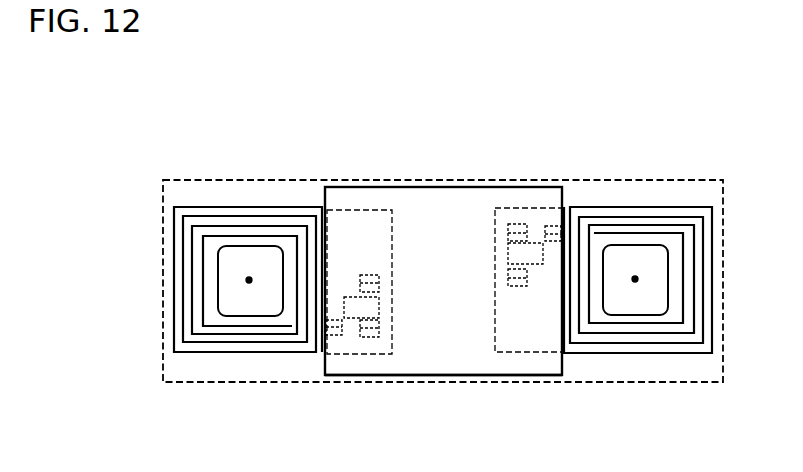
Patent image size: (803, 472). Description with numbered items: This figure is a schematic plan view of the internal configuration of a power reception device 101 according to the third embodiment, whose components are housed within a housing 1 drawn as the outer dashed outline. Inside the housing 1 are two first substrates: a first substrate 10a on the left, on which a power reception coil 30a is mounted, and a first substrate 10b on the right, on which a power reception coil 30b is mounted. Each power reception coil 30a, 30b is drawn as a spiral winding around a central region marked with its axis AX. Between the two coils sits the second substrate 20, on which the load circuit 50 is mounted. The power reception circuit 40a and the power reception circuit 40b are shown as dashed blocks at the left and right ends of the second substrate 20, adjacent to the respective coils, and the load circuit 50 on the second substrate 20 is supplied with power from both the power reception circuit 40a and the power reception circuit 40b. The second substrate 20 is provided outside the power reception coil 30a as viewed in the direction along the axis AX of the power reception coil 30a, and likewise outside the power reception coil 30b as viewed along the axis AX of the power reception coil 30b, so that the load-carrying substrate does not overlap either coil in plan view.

The housing 1 is at (710, 382).
The power reception device 101 is at (540, 130).
The second substrate 20 is at (428, 375).
The load circuit 50 is at (472, 360).
The first substrate 10a is at (203, 352).
The first substrate 10b is at (658, 353).
The power reception coil 30a is at (250, 342).
The power reception coil 30b is at (592, 343).
The power reception circuit 40a is at (370, 337).
The power reception circuit 40b is at (518, 287).